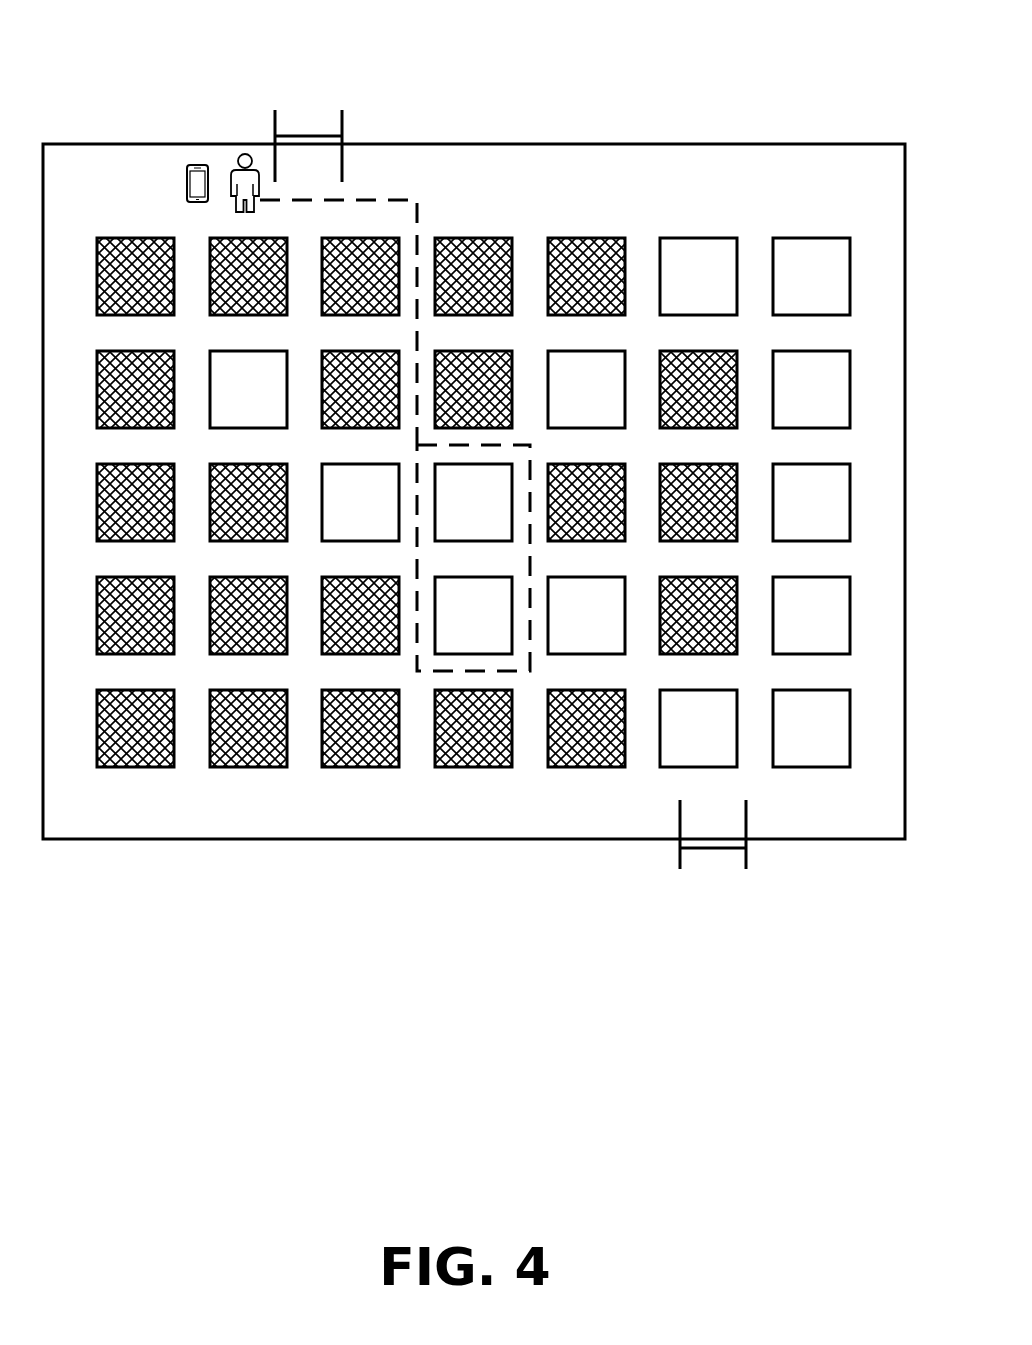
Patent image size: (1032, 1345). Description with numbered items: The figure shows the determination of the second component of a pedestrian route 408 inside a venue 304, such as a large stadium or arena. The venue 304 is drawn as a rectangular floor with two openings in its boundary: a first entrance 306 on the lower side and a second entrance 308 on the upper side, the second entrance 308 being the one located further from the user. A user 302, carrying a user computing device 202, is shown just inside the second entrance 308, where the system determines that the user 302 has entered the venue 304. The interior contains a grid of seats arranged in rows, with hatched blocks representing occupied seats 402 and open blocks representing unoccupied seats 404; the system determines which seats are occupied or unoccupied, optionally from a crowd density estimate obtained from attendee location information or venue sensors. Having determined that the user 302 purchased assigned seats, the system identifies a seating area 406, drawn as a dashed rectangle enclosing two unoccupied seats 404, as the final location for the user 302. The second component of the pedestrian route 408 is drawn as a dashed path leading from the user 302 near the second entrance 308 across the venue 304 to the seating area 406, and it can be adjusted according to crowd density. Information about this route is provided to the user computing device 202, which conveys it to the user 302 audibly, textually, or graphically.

The user computing device 202 is at (187, 167).
The user 302 is at (232, 173).
The venue 304 is at (473, 839).
The first entrance 306 is at (720, 852).
The second entrance 308 is at (313, 136).
The occupied seats 402 is at (587, 238).
The unoccupied seats 404 is at (810, 238).
The seating area 406 is at (433, 673).
The second component of the pedestrian route 408 is at (393, 200).